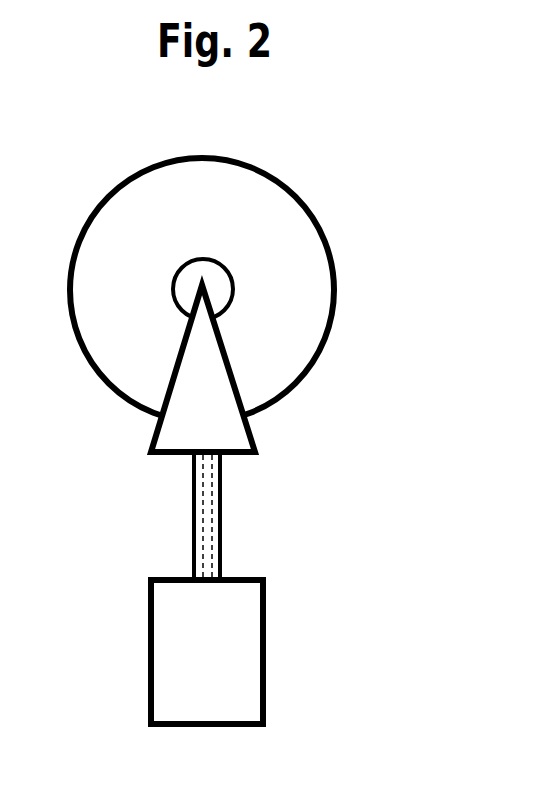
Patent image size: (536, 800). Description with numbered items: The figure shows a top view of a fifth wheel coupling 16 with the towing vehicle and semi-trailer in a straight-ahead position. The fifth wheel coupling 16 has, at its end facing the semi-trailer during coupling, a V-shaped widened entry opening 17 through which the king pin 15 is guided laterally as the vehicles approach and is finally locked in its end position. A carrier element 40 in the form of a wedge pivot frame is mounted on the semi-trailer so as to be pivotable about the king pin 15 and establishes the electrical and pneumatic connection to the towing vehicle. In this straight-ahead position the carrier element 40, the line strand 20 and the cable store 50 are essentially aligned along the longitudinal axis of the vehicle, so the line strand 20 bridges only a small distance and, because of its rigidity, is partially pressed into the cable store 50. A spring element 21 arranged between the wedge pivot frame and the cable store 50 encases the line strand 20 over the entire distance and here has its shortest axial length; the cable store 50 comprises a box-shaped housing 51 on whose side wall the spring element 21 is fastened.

The king pin 15 is at (237, 280).
The fifth wheel coupling 16 is at (100, 195).
The entry opening 17 is at (175, 401).
The line strand 20 is at (200, 540).
The spring element 21 is at (221, 542).
The carrier element 40 is at (253, 427).
The cable store 50 is at (128, 710).
The housing 51 is at (286, 682).